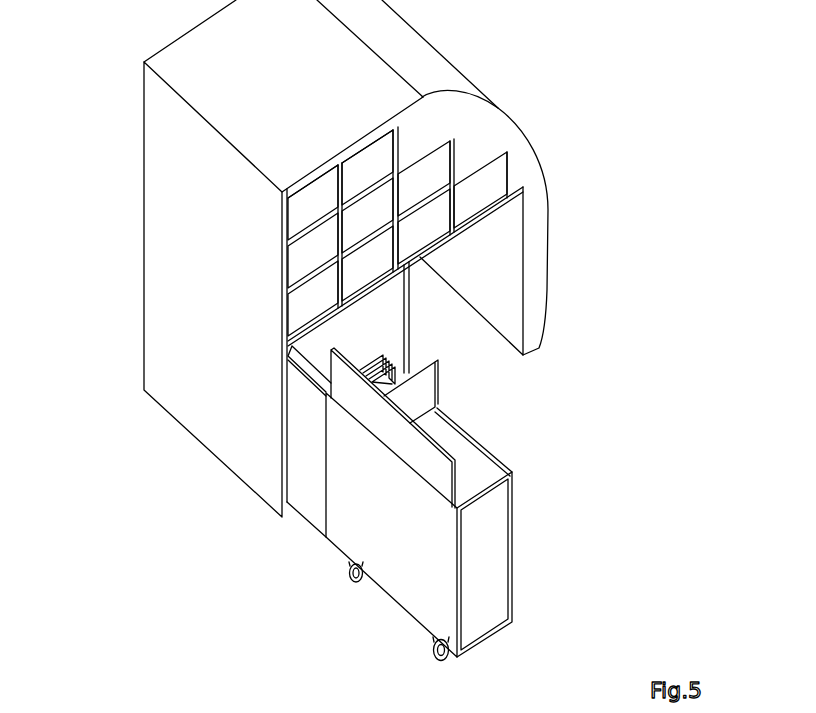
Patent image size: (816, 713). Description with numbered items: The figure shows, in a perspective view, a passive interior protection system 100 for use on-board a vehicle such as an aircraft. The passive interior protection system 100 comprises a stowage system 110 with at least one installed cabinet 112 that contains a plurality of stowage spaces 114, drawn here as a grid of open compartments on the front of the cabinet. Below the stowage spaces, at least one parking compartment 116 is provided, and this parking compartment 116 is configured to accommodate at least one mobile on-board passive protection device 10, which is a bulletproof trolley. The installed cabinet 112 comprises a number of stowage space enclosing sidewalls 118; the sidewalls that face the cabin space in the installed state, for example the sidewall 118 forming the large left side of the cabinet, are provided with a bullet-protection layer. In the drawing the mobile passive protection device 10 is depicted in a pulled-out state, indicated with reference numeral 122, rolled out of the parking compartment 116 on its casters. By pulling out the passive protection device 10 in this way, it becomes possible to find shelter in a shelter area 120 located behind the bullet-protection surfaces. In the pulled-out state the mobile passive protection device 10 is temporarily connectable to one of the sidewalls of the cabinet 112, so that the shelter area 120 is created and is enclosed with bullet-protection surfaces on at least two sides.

The mobile on-board passive protection device 10 is at (469, 530).
The passive interior protection system 100 is at (331, 356).
The stowage system 110 is at (299, 268).
The installed cabinet 112 is at (349, 250).
The stowage spaces 114 is at (298, 210).
The parking compartment 116 is at (298, 356).
The stowage space enclosing sidewall 118 is at (180, 393).
The shelter area 120 is at (522, 414).
The pulled-out state 122 is at (490, 660).